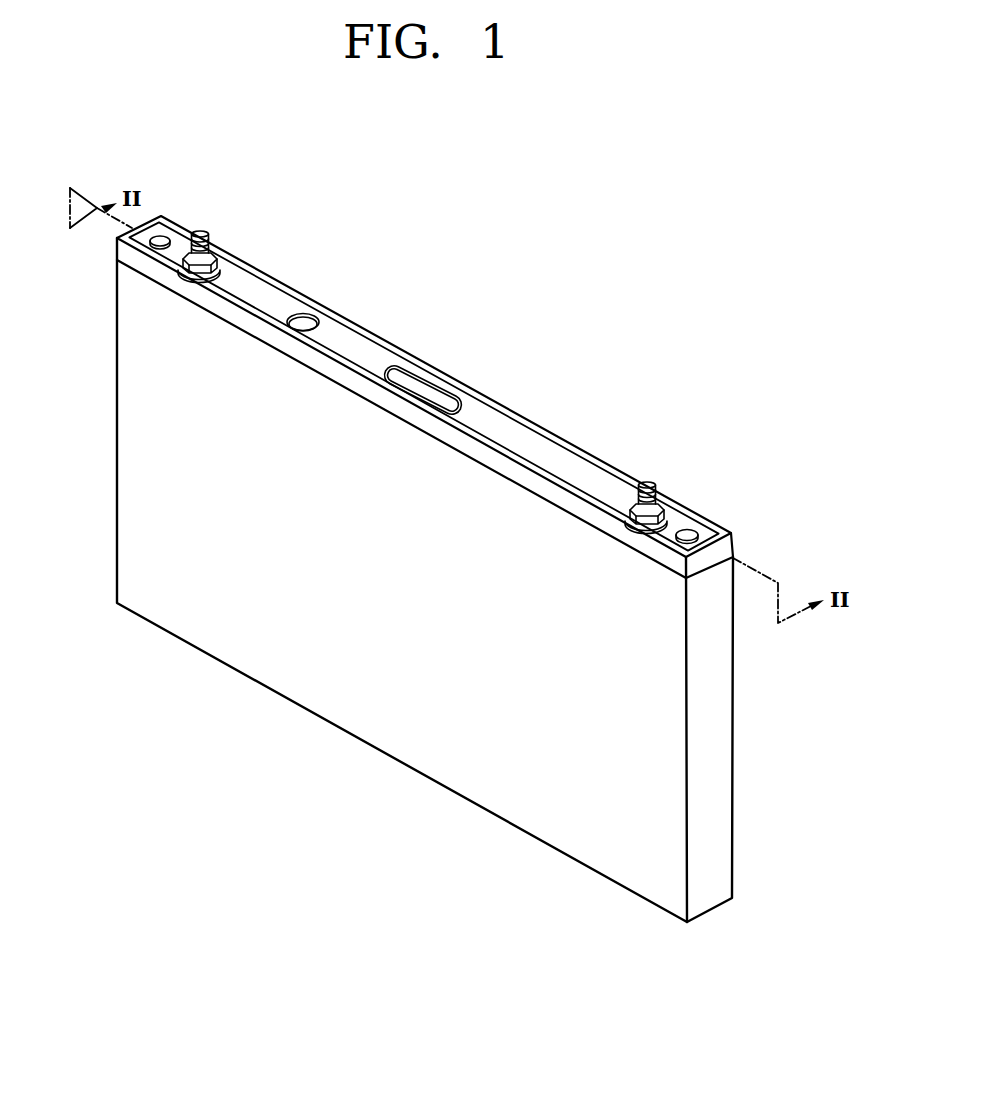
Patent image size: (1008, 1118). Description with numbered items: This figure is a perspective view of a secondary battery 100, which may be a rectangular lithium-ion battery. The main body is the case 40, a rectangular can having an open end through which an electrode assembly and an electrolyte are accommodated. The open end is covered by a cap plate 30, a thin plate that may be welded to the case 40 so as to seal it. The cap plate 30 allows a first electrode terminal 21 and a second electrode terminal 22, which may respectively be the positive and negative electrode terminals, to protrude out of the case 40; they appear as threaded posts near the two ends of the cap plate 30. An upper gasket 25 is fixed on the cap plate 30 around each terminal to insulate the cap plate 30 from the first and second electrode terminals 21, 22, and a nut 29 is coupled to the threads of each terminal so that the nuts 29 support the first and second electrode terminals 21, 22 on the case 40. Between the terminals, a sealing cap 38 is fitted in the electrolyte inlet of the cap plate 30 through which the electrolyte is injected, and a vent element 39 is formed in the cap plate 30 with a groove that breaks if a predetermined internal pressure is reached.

The secondary battery 100 is at (612, 360).
The first electrode terminal 21 is at (200, 232).
The second electrode terminal 22 is at (650, 483).
The upper gasket 25 is at (695, 512).
The nut 29 is at (665, 515).
The cap plate 30 is at (356, 348).
The sealing cap 38 is at (303, 321).
The vent element 39 is at (432, 388).
The case 40 is at (626, 850).